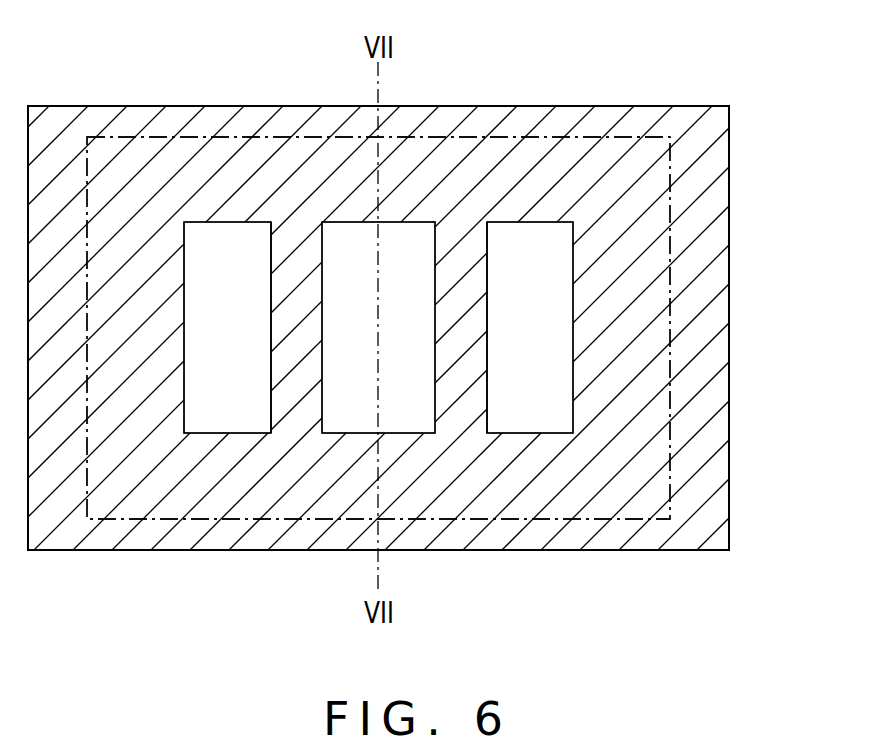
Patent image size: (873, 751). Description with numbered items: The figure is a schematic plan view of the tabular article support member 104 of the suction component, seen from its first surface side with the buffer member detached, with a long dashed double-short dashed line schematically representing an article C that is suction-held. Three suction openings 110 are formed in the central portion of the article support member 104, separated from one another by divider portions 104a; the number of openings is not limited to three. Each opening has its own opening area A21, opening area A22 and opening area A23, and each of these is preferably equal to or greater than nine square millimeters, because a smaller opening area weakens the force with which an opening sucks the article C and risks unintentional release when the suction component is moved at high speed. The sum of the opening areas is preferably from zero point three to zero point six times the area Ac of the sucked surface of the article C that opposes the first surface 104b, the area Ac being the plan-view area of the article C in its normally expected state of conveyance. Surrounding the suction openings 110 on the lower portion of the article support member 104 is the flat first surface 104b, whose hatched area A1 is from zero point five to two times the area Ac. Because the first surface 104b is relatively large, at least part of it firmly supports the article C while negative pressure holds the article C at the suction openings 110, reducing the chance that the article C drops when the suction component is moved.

The article support member 104 is at (170, 556).
The divider portion 104a is at (293, 327).
The first surface 104b is at (713, 196).
The suction opening 110 is at (271, 247).
The area of the first surface A1 is at (695, 522).
The opening area A21 is at (215, 400).
The opening area A22 is at (343, 402).
The opening area A23 is at (512, 413).
The area of the sucked surface Ac is at (624, 510).
The article C is at (572, 520).